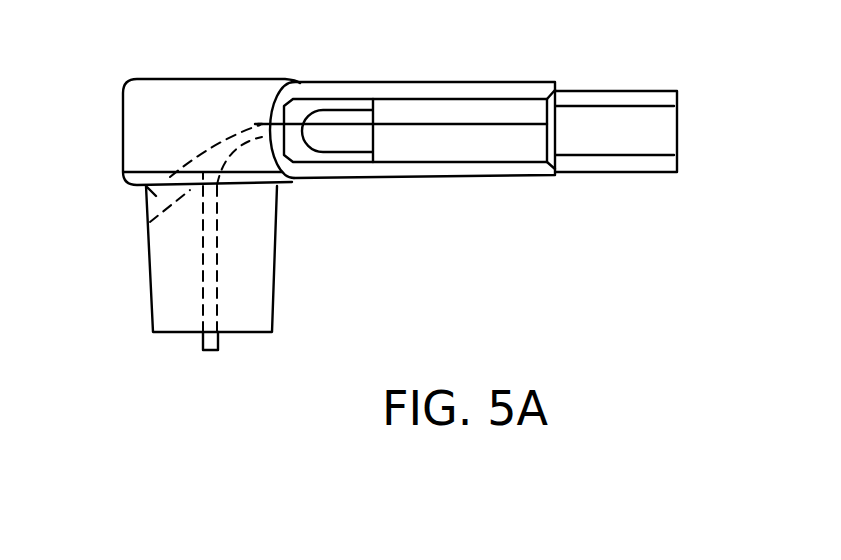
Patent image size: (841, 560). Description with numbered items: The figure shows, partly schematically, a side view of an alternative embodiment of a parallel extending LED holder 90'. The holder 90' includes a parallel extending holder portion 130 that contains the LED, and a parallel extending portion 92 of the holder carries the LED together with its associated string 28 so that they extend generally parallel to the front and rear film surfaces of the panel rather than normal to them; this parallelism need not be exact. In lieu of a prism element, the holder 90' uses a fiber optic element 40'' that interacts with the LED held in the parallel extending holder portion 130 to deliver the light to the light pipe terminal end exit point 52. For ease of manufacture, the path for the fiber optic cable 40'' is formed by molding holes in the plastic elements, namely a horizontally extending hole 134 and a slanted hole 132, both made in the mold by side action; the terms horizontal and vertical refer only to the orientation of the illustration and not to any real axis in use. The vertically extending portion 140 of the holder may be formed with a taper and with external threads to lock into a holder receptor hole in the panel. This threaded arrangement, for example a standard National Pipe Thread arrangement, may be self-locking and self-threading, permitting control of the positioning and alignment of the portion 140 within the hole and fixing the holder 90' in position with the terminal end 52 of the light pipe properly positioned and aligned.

The parallel extending LED holder 90' is at (71, 120).
The parallel extending holder portion 130 is at (145, 102).
The parallel extending portion 92 is at (458, 182).
The string 28 is at (607, 138).
The vertically extending portion 140 is at (273, 245).
The fiber optic element 40'' is at (173, 237).
The slanted hole 132 is at (150, 208).
The horizontally extending hole 134 is at (230, 133).
The light pipe terminal end exit point 52 is at (218, 345).